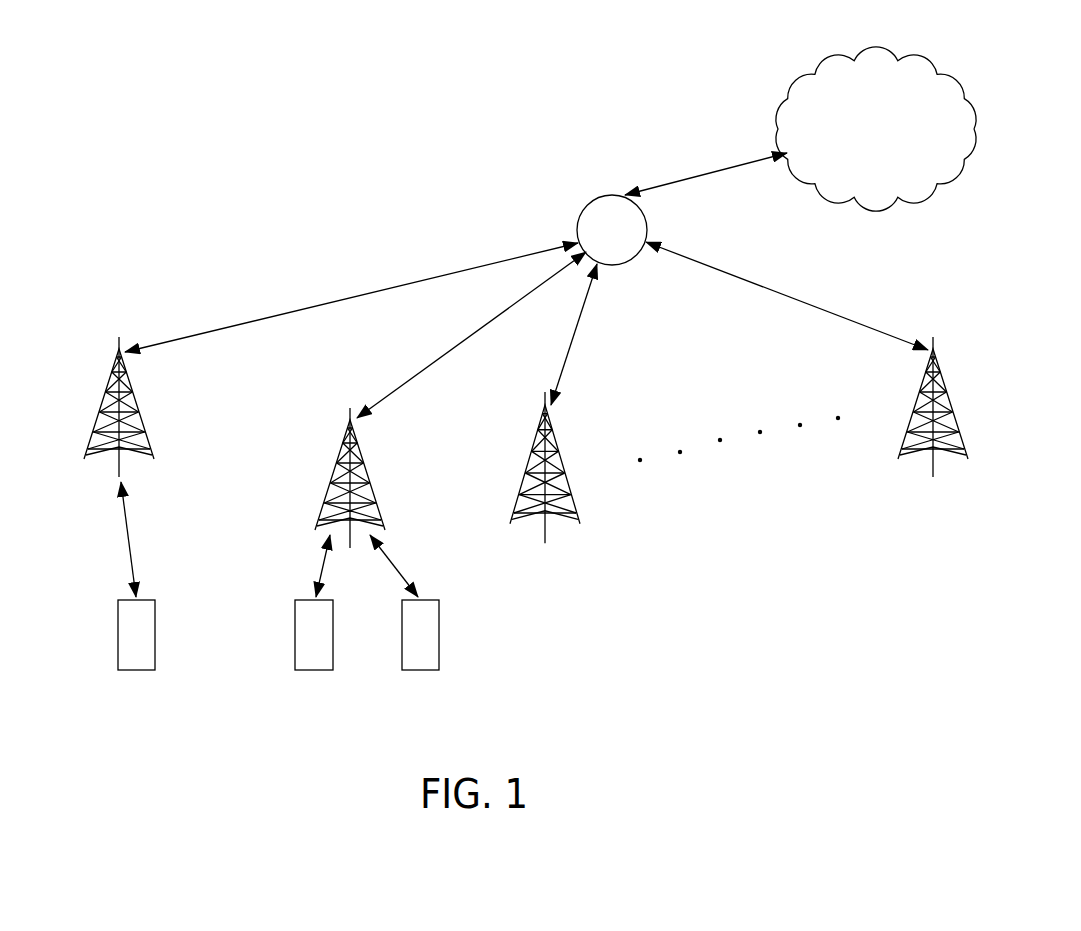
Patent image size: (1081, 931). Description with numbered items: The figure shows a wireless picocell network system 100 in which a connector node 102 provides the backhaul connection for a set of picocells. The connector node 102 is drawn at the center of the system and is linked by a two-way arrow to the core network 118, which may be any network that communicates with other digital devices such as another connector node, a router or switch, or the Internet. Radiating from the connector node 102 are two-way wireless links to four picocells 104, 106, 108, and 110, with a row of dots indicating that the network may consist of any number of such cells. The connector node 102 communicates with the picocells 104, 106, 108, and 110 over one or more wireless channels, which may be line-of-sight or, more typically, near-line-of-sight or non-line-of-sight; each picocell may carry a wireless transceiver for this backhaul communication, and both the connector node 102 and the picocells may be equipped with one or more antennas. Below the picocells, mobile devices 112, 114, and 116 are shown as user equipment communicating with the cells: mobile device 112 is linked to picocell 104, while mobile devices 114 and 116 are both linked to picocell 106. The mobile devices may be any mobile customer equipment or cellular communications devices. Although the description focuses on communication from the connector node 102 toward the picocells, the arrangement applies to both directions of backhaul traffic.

The system 100 is at (180, 245).
The connector node 102 is at (577, 222).
The picocell 104 is at (137, 420).
The picocell 106 is at (372, 487).
The picocell 108 is at (570, 512).
The picocell 110 is at (952, 415).
The mobile device 112 is at (155, 643).
The mobile device 114 is at (333, 666).
The mobile device 116 is at (438, 666).
The core network 118 is at (876, 129).